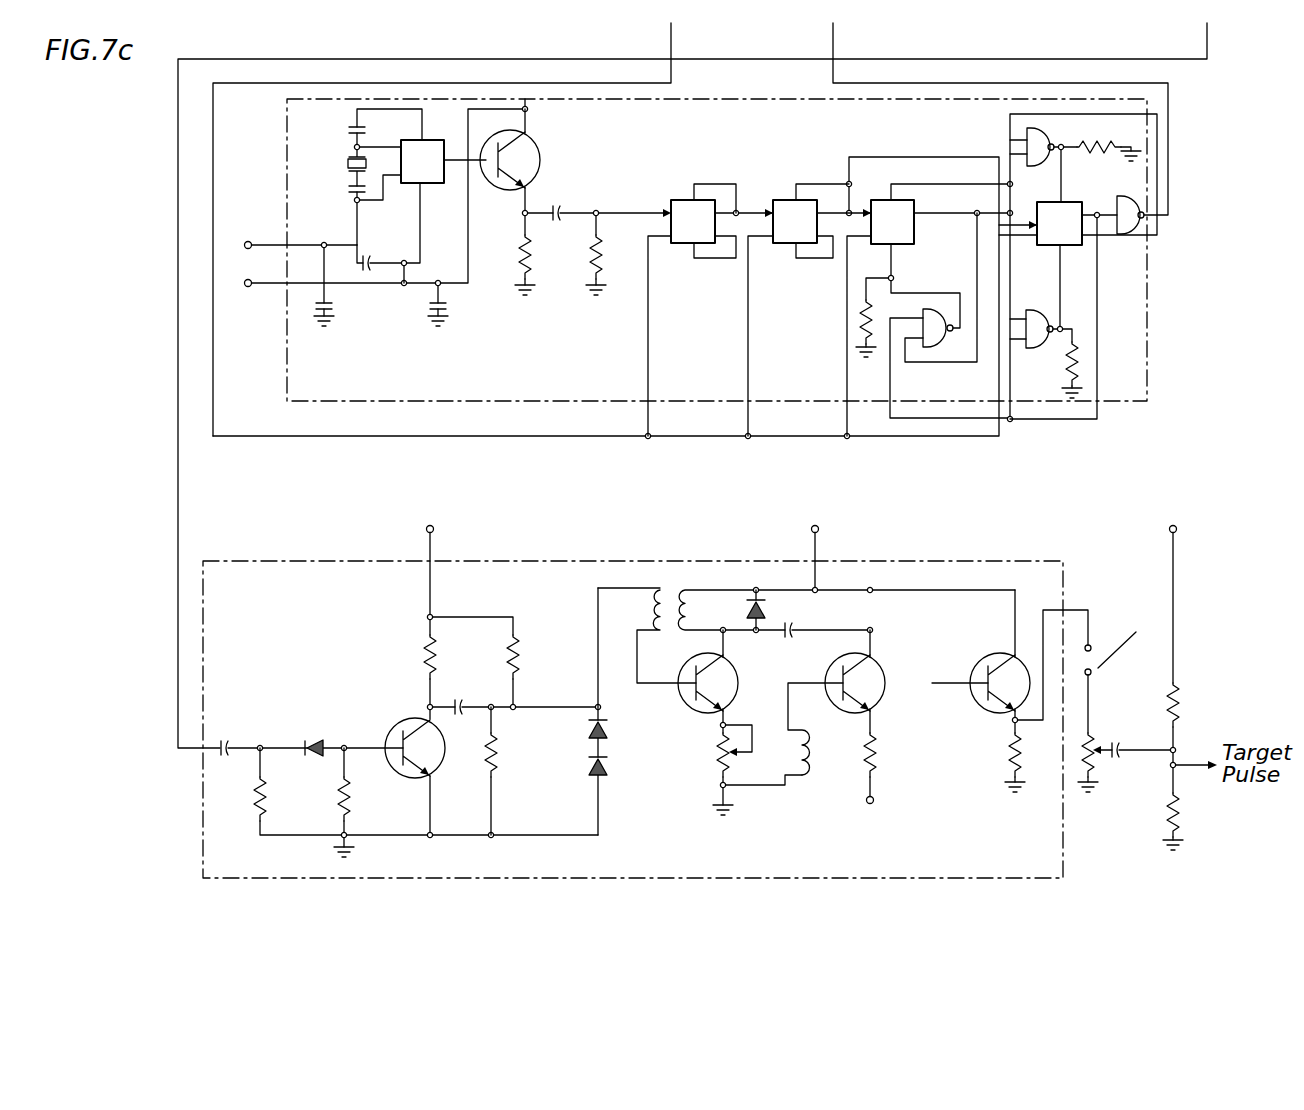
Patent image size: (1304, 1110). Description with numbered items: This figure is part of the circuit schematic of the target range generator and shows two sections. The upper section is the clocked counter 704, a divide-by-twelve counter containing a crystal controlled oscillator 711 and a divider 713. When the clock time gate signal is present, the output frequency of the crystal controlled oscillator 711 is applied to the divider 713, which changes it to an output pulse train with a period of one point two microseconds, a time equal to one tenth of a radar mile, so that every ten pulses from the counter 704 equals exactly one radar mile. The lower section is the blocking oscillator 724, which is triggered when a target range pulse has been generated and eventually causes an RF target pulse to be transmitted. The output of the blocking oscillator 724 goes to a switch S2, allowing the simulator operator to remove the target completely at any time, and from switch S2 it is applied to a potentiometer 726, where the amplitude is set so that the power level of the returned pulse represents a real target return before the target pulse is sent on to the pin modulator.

The clocked counter 704 is at (512, 408).
The crystal controlled oscillator 711 is at (543, 136).
The divider 713 is at (893, 135).
The blocking oscillator 724 is at (829, 884).
The switch S2 is at (1115, 642).
The potentiometer 726 is at (1093, 768).